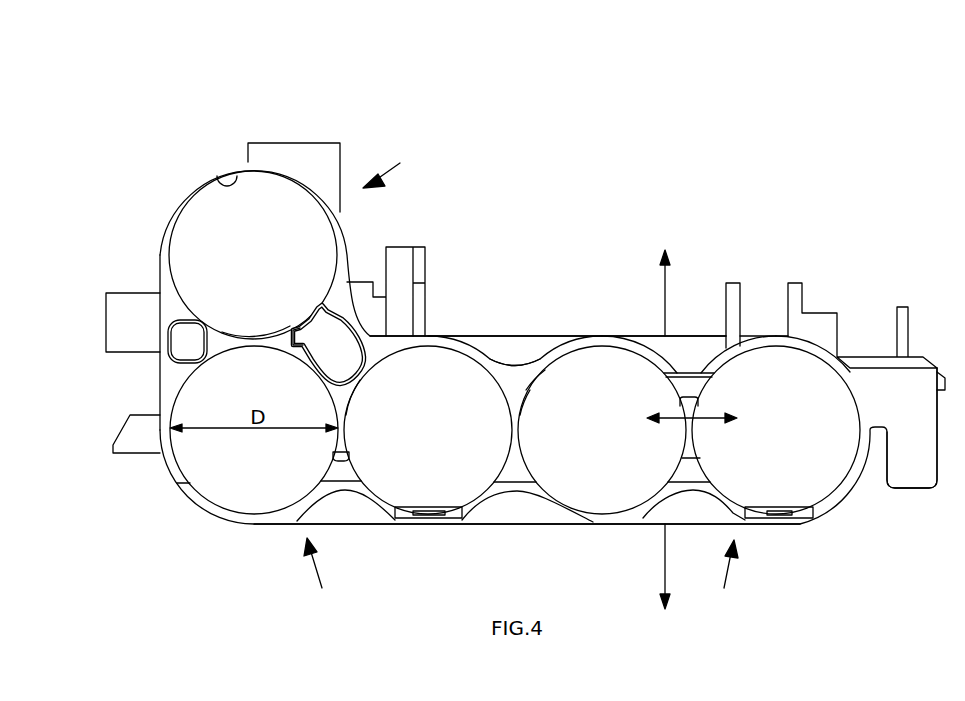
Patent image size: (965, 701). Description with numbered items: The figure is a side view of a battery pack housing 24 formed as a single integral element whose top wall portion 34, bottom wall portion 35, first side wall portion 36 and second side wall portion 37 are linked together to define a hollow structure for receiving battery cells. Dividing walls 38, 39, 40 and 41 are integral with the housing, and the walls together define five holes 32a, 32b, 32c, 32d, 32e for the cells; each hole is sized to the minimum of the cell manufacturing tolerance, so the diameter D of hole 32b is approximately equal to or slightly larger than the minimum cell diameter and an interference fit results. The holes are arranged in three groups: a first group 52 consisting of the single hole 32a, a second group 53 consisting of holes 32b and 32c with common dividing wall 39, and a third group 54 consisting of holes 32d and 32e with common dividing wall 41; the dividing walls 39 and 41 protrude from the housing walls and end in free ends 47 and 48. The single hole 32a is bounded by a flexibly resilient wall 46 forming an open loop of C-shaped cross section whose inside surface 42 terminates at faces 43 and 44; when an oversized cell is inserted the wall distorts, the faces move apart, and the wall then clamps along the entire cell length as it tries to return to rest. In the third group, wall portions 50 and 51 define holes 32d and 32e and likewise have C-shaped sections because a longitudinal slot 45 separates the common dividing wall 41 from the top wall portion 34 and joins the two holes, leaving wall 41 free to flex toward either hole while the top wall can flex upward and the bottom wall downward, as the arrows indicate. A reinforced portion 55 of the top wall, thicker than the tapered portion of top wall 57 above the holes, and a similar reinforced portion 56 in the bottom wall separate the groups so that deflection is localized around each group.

The battery pack housing 24 is at (318, 153).
The hole 32a is at (202, 213).
The hole 32b is at (238, 470).
The hole 32c is at (433, 470).
The hole 32d is at (630, 475).
The hole 32e is at (818, 473).
The top wall portion 34 is at (605, 341).
The bottom wall portion 35 is at (532, 527).
The first side wall portion 36 is at (158, 372).
The second side wall portion 37 is at (865, 448).
The dividing wall 38 is at (247, 342).
The dividing wall 39 is at (345, 393).
The dividing wall 40 is at (522, 435).
The common dividing wall 41 is at (690, 458).
The inside surface 42 is at (222, 181).
The face 43 is at (317, 307).
The face 44 is at (293, 330).
The longitudinal slot 45 is at (693, 393).
The wall 46 is at (160, 220).
The free end 47 is at (350, 458).
The free end 48 is at (700, 398).
The wall portion 50 is at (533, 375).
The wall portion 51 is at (777, 342).
The first group of holes 52 is at (401, 163).
The second group of holes 53 is at (321, 576).
The third group of holes 54 is at (721, 577).
The reinforced portion 55 is at (518, 355).
The reinforced portion 56 is at (508, 508).
The tapered portion of top wall 57 is at (562, 336).